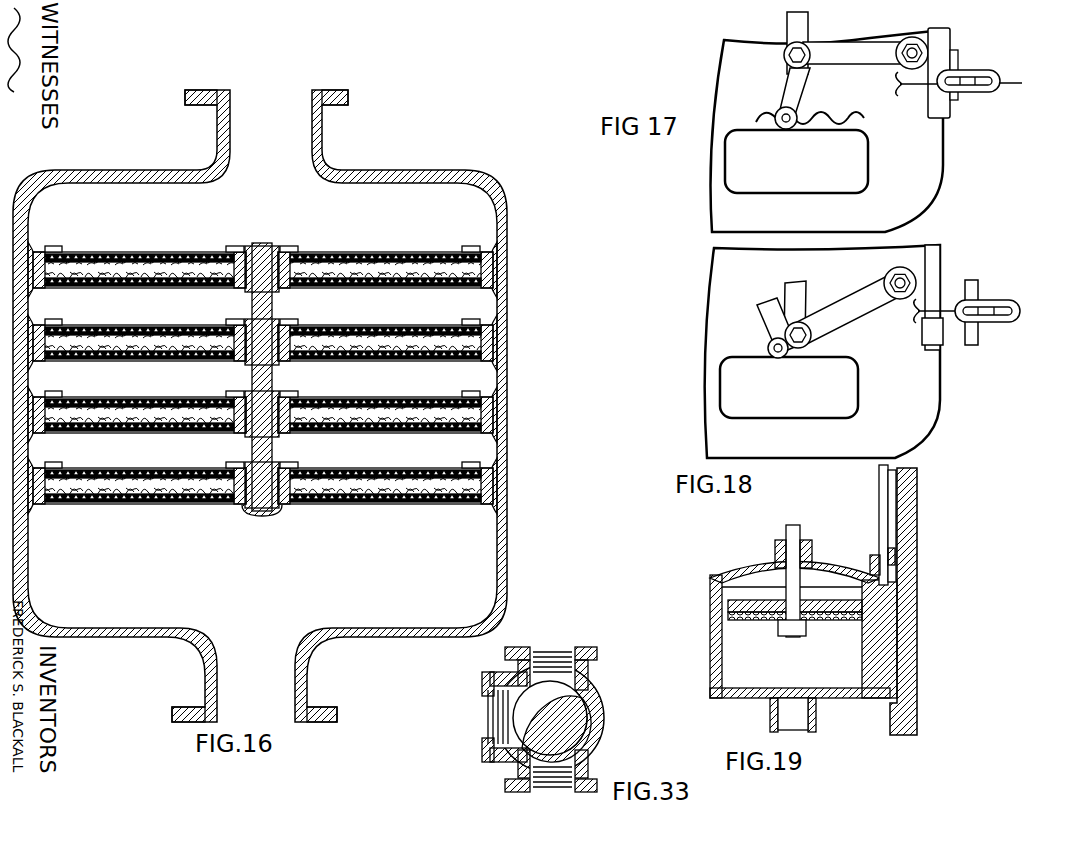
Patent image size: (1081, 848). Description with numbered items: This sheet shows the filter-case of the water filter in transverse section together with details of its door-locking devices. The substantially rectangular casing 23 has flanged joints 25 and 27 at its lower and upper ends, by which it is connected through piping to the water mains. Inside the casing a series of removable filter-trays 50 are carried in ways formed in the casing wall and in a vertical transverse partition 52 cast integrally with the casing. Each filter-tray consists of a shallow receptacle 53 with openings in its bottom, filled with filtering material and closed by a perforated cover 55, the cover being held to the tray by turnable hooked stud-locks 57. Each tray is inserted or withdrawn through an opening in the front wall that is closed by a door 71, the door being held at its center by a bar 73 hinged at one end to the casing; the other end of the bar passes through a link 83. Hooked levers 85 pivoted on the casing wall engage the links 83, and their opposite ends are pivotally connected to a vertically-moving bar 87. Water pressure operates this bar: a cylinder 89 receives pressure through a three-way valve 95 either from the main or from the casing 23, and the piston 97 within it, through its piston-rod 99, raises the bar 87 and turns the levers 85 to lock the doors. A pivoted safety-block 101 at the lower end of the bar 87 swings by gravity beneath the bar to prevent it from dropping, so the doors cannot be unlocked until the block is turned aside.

In FIG. 16, the casing 23 is at (486, 178).
In FIG. 17, the casing 23 is at (827, 131).
In FIG. 18, the casing 23 is at (824, 351).
In FIG. 19, the casing 23 is at (896, 738).
In FIG. 16, the flanged joint 25 is at (310, 683).
In FIG. 16, the flanged joint 27 is at (322, 140).
In FIG. 16, the filter-tray 50 is at (160, 282).
In FIG. 16, the vertical transverse partition 52 is at (258, 514).
In FIG. 16, the receptacle 53 is at (165, 363).
In FIG. 16, the cover 55 is at (96, 300).
In FIG. 16, the stud-lock 57 is at (70, 237).
In FIG. 17, the door 71 is at (950, 108).
In FIG. 18, the door 71 is at (978, 283).
In FIG. 17, the bar 73 is at (1022, 83).
In FIG. 18, the bar 73 is at (1000, 304).
In FIG. 17, the link 83 is at (980, 70).
In FIG. 18, the link 83 is at (1018, 318).
In FIG. 17, the lever 85 is at (860, 62).
In FIG. 18, the lever 85 is at (862, 295).
In FIG. 17, the vertically-moving bar 87 is at (787, 22).
In FIG. 18, the vertically-moving bar 87 is at (795, 283).
In FIG. 19, the vertically-moving bar 87 is at (878, 474).
In FIG. 19, the cylinder 89 is at (710, 643).
In FIG. 33, the three-way valve 95 is at (603, 718).
In FIG. 19, the piston 97 is at (833, 612).
In FIG. 19, the piston-rod 99 is at (797, 543).
In FIG. 17, the safety-block 101 is at (790, 80).
In FIG. 18, the safety-block 101 is at (770, 316).
In FIG. 19, the safety-block 101 is at (890, 498).